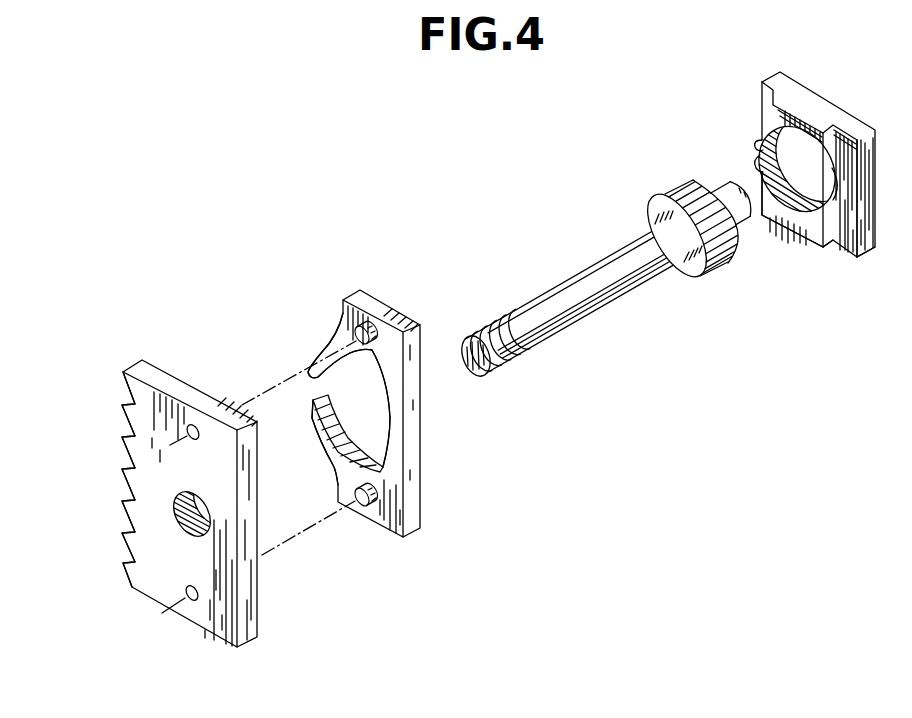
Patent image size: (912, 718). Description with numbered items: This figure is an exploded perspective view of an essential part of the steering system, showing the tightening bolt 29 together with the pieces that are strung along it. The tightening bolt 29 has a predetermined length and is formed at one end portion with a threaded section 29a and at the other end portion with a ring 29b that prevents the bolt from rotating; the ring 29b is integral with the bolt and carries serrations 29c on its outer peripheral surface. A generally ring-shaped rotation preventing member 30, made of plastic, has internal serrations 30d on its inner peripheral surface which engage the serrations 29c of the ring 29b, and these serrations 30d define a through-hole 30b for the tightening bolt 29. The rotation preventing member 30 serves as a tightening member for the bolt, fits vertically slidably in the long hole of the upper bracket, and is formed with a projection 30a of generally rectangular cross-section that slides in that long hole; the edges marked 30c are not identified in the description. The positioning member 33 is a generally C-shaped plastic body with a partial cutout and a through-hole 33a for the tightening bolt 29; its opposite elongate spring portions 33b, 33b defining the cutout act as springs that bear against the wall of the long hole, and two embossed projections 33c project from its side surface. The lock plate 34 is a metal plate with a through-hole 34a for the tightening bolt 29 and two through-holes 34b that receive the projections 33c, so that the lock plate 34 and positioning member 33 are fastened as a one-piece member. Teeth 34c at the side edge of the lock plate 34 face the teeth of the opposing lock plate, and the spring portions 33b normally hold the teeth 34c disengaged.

The tightening bolt 29 is at (614, 302).
The threaded section 29a is at (522, 352).
The ring 29b is at (697, 274).
The serrations 29c is at (724, 264).
The rotation preventing member 30 is at (815, 102).
The projection 30a is at (787, 222).
The through-hole 30b is at (850, 237).
The slot edges of nut block 30c is at (756, 163).
The internal serrations 30d is at (815, 250).
The positioning member 33 is at (410, 500).
The through-hole 33a is at (380, 404).
The spring portions 33b is at (316, 368).
The projections 33c is at (368, 326).
The lock plate 34 is at (248, 597).
The through-hole 34a is at (178, 525).
The through-holes 34b is at (197, 424).
The teeth 34c is at (122, 478).